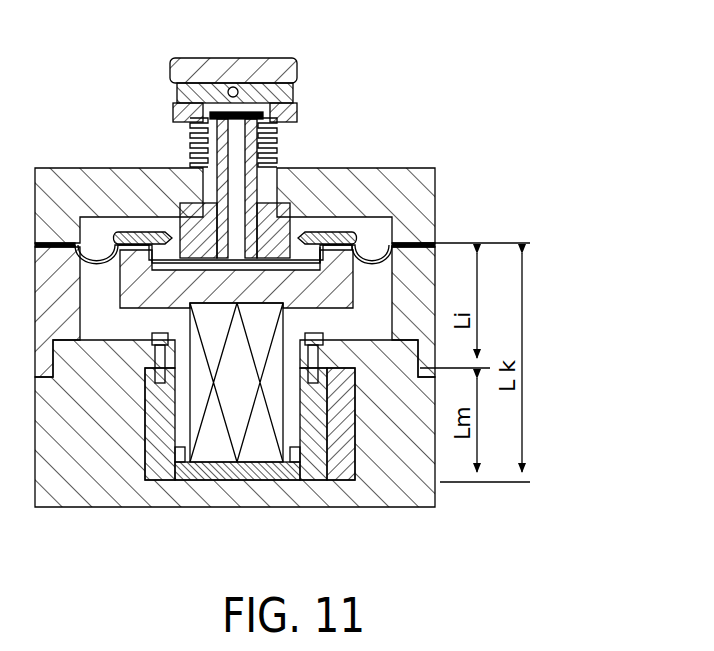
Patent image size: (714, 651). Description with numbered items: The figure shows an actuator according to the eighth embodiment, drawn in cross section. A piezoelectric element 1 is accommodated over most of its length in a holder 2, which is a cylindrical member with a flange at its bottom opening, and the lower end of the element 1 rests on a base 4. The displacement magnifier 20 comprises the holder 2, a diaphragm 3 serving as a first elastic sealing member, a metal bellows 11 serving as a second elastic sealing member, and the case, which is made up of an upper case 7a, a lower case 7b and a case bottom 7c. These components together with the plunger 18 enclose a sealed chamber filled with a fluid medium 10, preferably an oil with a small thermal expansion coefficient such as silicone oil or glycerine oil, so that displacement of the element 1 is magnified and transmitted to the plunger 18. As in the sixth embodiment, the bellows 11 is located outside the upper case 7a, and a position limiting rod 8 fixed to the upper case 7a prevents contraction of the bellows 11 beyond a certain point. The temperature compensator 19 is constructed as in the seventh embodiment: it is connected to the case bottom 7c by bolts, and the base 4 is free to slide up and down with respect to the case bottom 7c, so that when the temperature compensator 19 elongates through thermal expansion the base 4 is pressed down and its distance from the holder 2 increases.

The piezoelectric element 1 is at (218, 458).
The holder 2 is at (338, 237).
The diaphragm 3 is at (382, 250).
The base 4 is at (320, 472).
The upper case 7a is at (74, 178).
The lower case 7b is at (412, 262).
The case bottom 7c is at (384, 490).
The position limiting rod 8 is at (192, 157).
The fluid medium 10 is at (366, 222).
The metal bellows 11 is at (272, 150).
The plunger 18 is at (178, 80).
The temperature compensator 19 is at (290, 472).
The displacement magnifier 20 is at (176, 140).